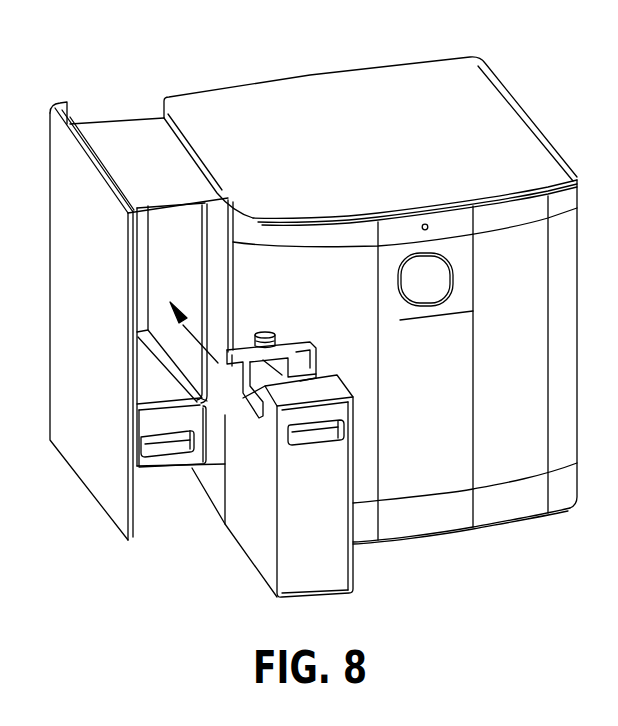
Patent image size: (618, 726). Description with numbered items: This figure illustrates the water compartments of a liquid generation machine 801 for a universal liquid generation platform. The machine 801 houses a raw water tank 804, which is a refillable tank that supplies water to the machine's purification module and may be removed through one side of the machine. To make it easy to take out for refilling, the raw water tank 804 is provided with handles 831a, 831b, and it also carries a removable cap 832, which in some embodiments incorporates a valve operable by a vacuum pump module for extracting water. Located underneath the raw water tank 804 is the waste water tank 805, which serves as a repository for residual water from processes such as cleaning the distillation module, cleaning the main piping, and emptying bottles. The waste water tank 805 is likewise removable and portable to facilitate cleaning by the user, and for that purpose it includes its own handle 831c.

The machine 801 is at (352, 45).
The raw water tank 804 is at (323, 535).
The waste water tank 805 is at (143, 427).
The handle 831a is at (350, 433).
The handle 831b is at (293, 372).
The handle 831c is at (157, 445).
The removable cap 832 is at (277, 342).